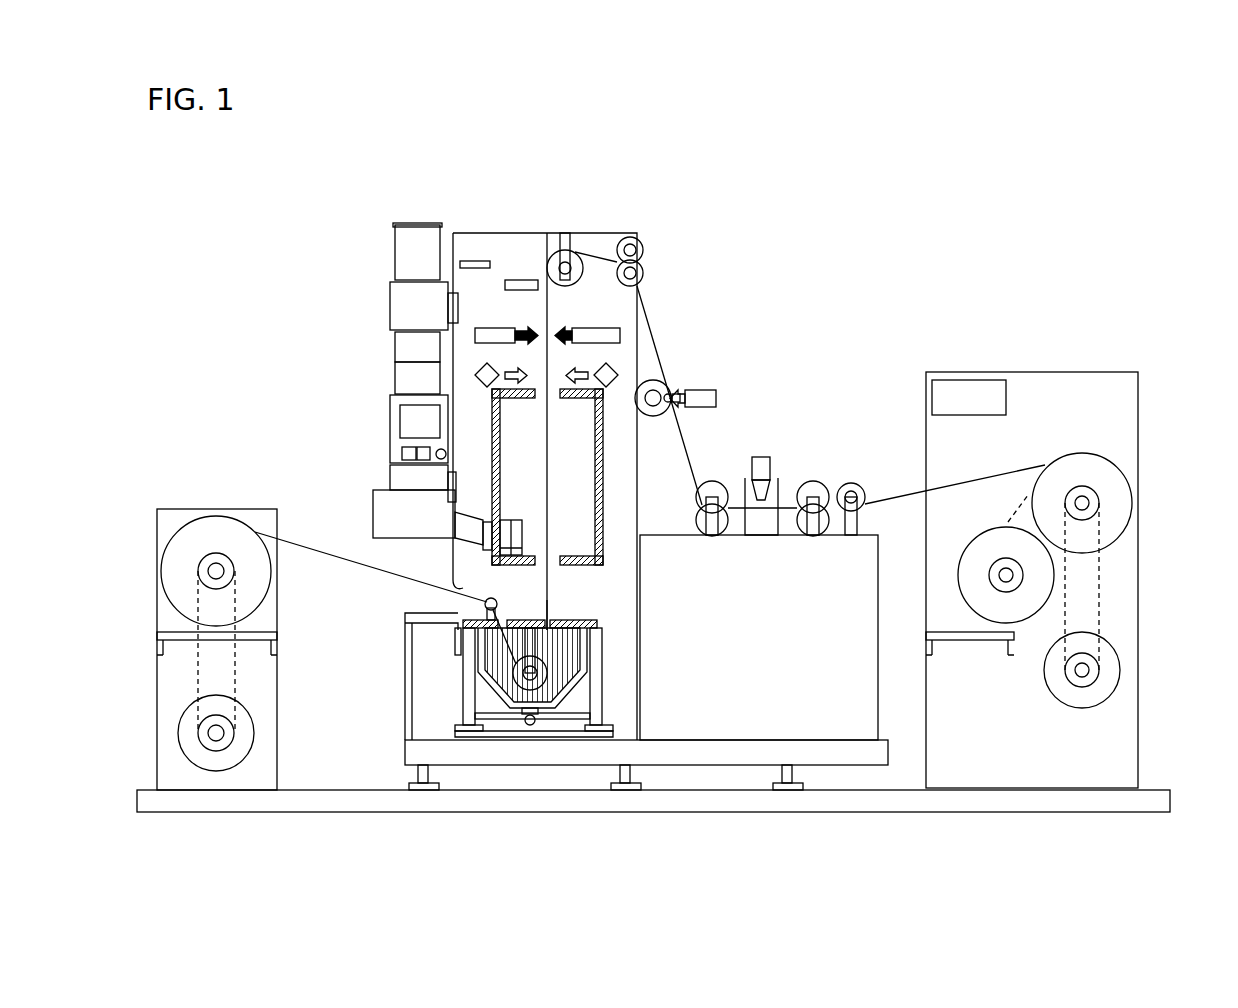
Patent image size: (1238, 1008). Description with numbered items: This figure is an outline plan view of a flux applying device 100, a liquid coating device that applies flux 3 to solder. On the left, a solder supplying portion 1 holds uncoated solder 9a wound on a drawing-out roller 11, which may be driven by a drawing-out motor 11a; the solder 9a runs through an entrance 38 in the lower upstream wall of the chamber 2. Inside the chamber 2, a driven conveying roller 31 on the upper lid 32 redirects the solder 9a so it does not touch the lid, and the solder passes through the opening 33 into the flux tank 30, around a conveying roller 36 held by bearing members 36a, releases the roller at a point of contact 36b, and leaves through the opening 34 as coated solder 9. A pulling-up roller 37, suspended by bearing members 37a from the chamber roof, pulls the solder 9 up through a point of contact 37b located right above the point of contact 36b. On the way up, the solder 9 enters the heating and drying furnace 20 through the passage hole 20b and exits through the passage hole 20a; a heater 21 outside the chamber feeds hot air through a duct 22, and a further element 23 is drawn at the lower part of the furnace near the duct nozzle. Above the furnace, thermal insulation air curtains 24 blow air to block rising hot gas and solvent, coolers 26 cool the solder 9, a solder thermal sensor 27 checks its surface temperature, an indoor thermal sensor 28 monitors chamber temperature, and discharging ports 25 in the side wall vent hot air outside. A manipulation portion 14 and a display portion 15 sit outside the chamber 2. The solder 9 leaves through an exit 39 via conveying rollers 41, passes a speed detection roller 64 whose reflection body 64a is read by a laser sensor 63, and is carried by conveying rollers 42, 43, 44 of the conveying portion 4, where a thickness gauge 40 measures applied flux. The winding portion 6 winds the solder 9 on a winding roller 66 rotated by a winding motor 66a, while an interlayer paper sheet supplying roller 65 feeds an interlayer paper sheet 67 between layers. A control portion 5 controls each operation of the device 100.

The flux applying device 100 is at (320, 322).
The solder supplying portion 1 is at (229, 792).
The chamber 2 is at (594, 768).
The flux 3 is at (551, 708).
The conveying portion 4 is at (812, 445).
The control portion 5 is at (984, 382).
The winding portion 6 is at (1012, 794).
The solder 9 is at (547, 426).
The solder 9a is at (312, 554).
The drawing-out roller 11 is at (266, 590).
The drawing-out motor 11a is at (256, 728).
The manipulation portion 14 is at (402, 453).
The display portion 15 is at (401, 428).
The heating and drying furnace 20 is at (561, 477).
The passage hole 20a is at (560, 400).
The passage hole 20b is at (562, 556).
The heater 21 is at (373, 518).
The duct 22 is at (473, 528).
The heater 23 is at (517, 520).
The thermal insulation air curtain 24 is at (487, 386).
The discharging port 25 is at (396, 254).
The cooler 26 is at (483, 328).
The solder thermal sensor 27 is at (518, 280).
The indoor thermal sensor 28 is at (462, 261).
The flux tank 30 is at (585, 682).
The conveying roller 31 is at (488, 600).
The upper lid 32 is at (458, 636).
The opening 33 is at (501, 621).
The opening 34 is at (551, 621).
The conveying roller 36 is at (515, 712).
The bearing members 36a is at (532, 662).
The point of contact 36b is at (540, 673).
The pulling-up roller 37 is at (572, 254).
The bearing members 37a is at (564, 240).
The point of contact 37b is at (556, 262).
The entrance 38 is at (545, 486).
The exit 39 is at (645, 290).
The thickness gauge 40 is at (760, 457).
The conveying rollers 41 is at (646, 256).
The conveying roller 42 is at (716, 480).
The conveying roller 43 is at (822, 480).
The conveying roller 44 is at (862, 480).
The laser sensor 63 is at (708, 391).
The speed detection roller 64 is at (655, 417).
The reflection body 64a is at (669, 393).
The interlayer paper sheet supplying roller 65 is at (958, 565).
The winding roller 66 is at (1103, 454).
The winding motor 66a is at (1120, 665).
The interlayer paper sheet 67 is at (1008, 518).